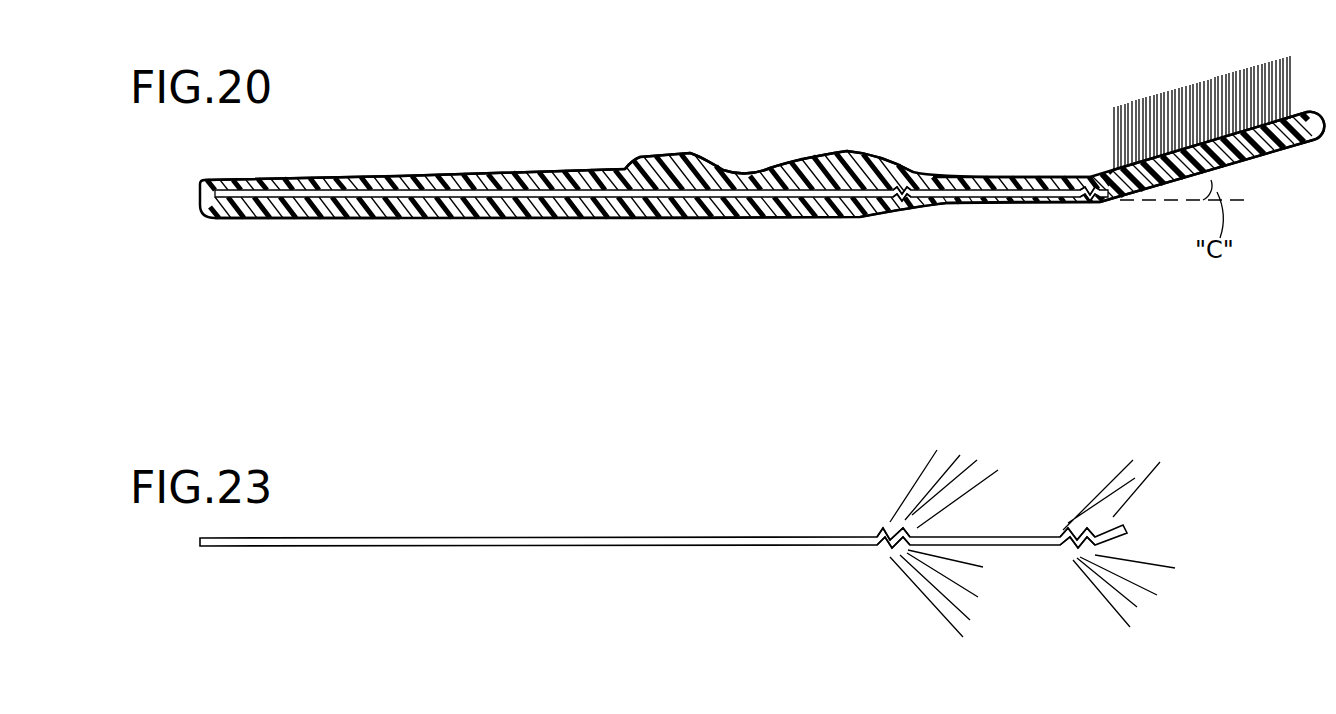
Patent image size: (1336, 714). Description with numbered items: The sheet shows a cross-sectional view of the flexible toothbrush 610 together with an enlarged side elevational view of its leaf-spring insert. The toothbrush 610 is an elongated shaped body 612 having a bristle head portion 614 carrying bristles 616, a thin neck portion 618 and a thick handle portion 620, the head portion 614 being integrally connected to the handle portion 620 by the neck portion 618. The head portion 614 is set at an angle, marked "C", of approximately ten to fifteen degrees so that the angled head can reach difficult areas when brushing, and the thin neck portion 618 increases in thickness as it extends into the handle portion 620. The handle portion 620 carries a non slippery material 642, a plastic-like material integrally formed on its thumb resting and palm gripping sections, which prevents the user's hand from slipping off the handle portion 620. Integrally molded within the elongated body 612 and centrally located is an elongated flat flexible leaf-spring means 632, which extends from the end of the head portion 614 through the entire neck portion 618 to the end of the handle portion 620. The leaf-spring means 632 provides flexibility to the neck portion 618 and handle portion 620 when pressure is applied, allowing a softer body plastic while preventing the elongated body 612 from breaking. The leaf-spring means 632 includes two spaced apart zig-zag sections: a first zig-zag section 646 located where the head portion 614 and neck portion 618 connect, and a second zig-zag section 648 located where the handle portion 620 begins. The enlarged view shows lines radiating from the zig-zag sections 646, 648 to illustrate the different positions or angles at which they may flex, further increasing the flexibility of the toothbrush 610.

In FIG. 20, the flexible toothbrush 610 is at (893, 70).
In FIG. 20, the elongated shaped body 612 is at (941, 212).
In FIG. 20, the bristle head portion 614 is at (1293, 141).
In FIG. 20, the bristles 616 is at (1229, 84).
In FIG. 20, the thin neck portion 618 is at (1000, 177).
In FIG. 20, the thick handle portion 620 is at (380, 177).
In FIG. 20, the elongated flat flexible leaf-spring means 632 is at (568, 198).
In FIG. 23, the elongated flat flexible leaf-spring means 632 is at (710, 497).
In FIG. 20, the non slippery material 642 is at (825, 152).
In FIG. 20, the first zig-zag section 646 is at (1090, 201).
In FIG. 23, the first zig-zag section 646 is at (1070, 555).
In FIG. 20, the second zig-zag section 648 is at (900, 201).
In FIG. 23, the second zig-zag section 648 is at (890, 552).